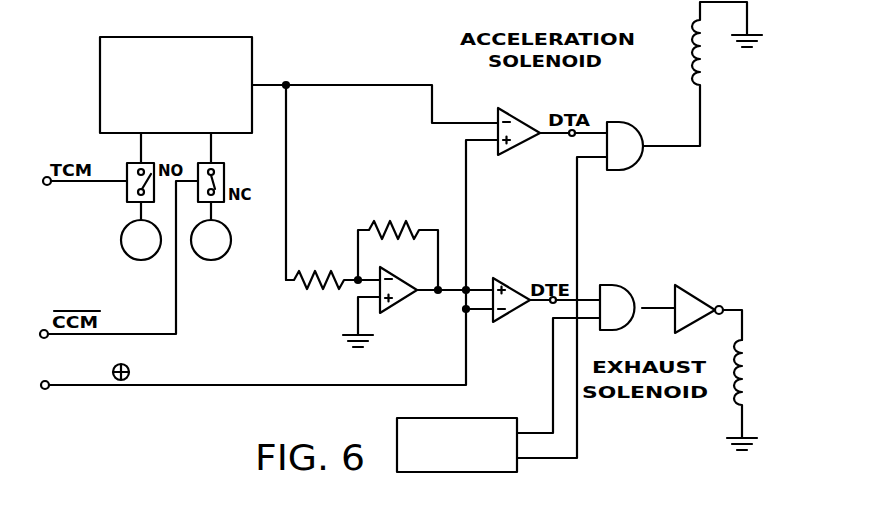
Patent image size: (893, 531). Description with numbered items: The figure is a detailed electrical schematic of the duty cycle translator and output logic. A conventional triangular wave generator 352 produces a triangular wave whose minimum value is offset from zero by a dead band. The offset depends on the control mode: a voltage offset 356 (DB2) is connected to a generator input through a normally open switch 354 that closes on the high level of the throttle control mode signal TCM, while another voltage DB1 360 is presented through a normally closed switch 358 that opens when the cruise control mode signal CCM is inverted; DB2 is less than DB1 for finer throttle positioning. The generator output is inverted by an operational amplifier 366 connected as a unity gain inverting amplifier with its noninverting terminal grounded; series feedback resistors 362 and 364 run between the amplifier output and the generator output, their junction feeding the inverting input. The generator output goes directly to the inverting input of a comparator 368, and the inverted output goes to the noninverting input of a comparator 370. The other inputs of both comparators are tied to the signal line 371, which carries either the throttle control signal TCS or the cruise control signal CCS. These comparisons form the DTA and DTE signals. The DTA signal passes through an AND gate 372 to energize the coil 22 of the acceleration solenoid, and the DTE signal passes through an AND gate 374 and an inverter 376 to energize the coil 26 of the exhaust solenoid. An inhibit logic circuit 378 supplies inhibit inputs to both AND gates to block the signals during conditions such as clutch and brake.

The coil of the acceleration solenoid 22 is at (709, 72).
The coil of the exhaust solenoid 26 is at (753, 362).
The triangular wave generator 352 is at (197, 38).
The switch 354 is at (126, 194).
The voltage offset 356 is at (120, 240).
The switch 358 is at (250, 170).
The voltage DB1 360 is at (232, 242).
The feedback resistor 362 is at (320, 277).
The feedback resistor 364 is at (402, 223).
The operational amplifier 366 is at (405, 300).
The comparator 368 is at (518, 150).
The comparator 370 is at (518, 305).
The signal line 371 is at (237, 386).
The AND gate 372 is at (620, 170).
The AND gate 374 is at (612, 285).
The inverter 376 is at (693, 298).
The inhibit logic circuit 378 is at (475, 418).